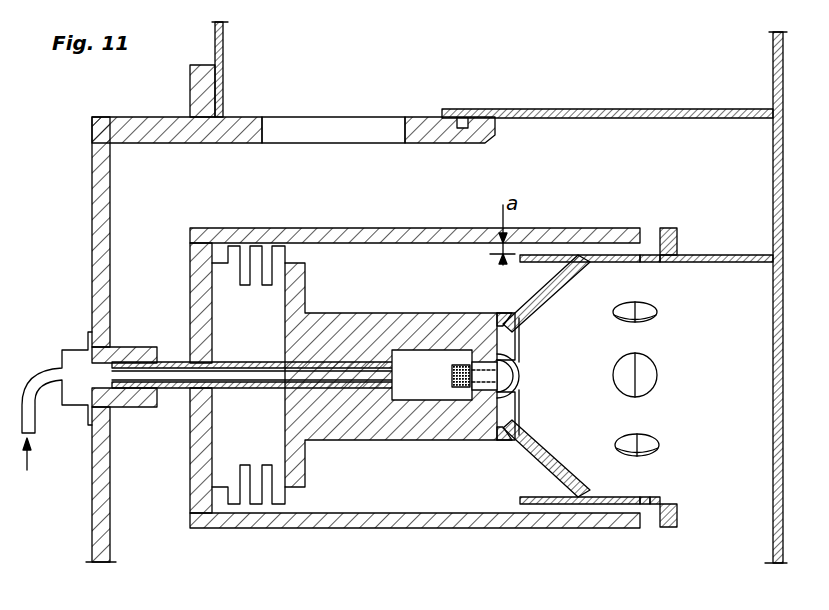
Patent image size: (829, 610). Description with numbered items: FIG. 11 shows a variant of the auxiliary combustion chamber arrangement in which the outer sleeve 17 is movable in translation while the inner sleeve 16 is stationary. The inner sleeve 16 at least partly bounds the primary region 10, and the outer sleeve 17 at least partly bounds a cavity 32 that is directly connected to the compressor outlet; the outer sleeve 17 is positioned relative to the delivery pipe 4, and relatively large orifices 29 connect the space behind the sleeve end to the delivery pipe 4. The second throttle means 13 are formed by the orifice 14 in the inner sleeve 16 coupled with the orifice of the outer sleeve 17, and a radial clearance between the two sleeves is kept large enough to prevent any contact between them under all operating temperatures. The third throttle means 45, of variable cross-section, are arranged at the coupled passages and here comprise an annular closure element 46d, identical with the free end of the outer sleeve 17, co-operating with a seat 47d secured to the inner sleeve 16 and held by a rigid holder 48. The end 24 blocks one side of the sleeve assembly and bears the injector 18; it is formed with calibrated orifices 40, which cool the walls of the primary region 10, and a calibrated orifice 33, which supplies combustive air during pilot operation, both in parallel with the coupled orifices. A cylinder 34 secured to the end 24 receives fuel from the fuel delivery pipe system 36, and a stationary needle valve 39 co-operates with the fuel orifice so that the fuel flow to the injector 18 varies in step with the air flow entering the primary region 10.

The delivery pipe 4 is at (591, 70).
The orifices 29 is at (348, 130).
The rigid holder 48 is at (748, 122).
The outer cylindrical sleeve 17 is at (400, 228).
The cavity 32 is at (310, 202).
The cylinder 34 is at (366, 432).
The needle valve 39 is at (410, 400).
The injector 18 is at (522, 372).
The calibrated orifice 33 is at (510, 312).
The calibrated orifices 40 is at (552, 290).
The end 24 is at (555, 480).
The orifice 14 is at (628, 262).
The annular closure element 46d is at (636, 226).
The inner cylindrical sleeve 16 is at (707, 262).
The seat 47d is at (677, 236).
The second throttle means 13 is at (650, 522).
The third throttle means 45 is at (655, 500).
The primary region 10 is at (723, 435).
The fuel delivery pipe system 36 is at (30, 378).